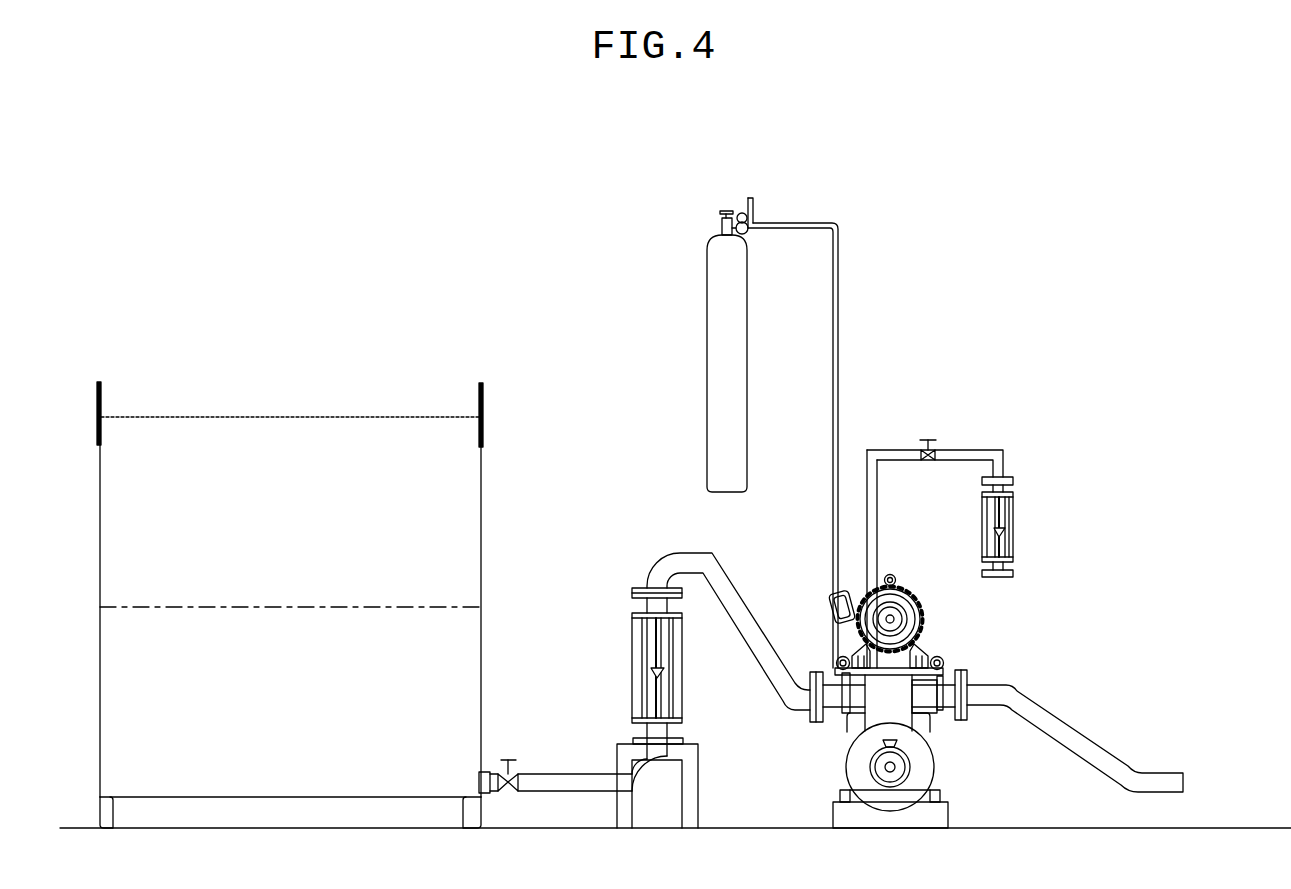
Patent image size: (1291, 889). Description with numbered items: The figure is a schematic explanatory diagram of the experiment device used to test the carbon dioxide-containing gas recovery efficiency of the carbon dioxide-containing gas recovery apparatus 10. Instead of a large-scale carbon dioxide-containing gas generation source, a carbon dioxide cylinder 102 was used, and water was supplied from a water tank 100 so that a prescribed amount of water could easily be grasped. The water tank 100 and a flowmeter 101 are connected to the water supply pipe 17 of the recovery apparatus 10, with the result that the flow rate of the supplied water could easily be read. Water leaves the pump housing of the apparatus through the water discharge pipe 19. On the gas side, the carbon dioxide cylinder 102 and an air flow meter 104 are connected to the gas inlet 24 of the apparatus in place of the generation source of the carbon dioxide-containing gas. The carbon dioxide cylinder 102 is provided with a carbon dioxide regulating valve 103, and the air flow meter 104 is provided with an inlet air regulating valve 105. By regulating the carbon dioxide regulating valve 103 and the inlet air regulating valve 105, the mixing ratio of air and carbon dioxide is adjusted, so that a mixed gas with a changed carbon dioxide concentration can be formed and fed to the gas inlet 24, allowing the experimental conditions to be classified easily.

The carbon dioxide-containing gas recovery apparatus 10 is at (911, 639).
The water supply pipe 17 is at (778, 678).
The water discharge pipe 19 is at (1050, 720).
The gas inlet 24 is at (875, 688).
The water tank 100 is at (200, 447).
The flowmeter 101 is at (657, 673).
The carbon dioxide cylinder 102 is at (727, 323).
The carbon dioxide regulating valve 103 is at (748, 230).
The air flow meter 104 is at (1000, 532).
The inlet air regulating valve 105 is at (932, 450).